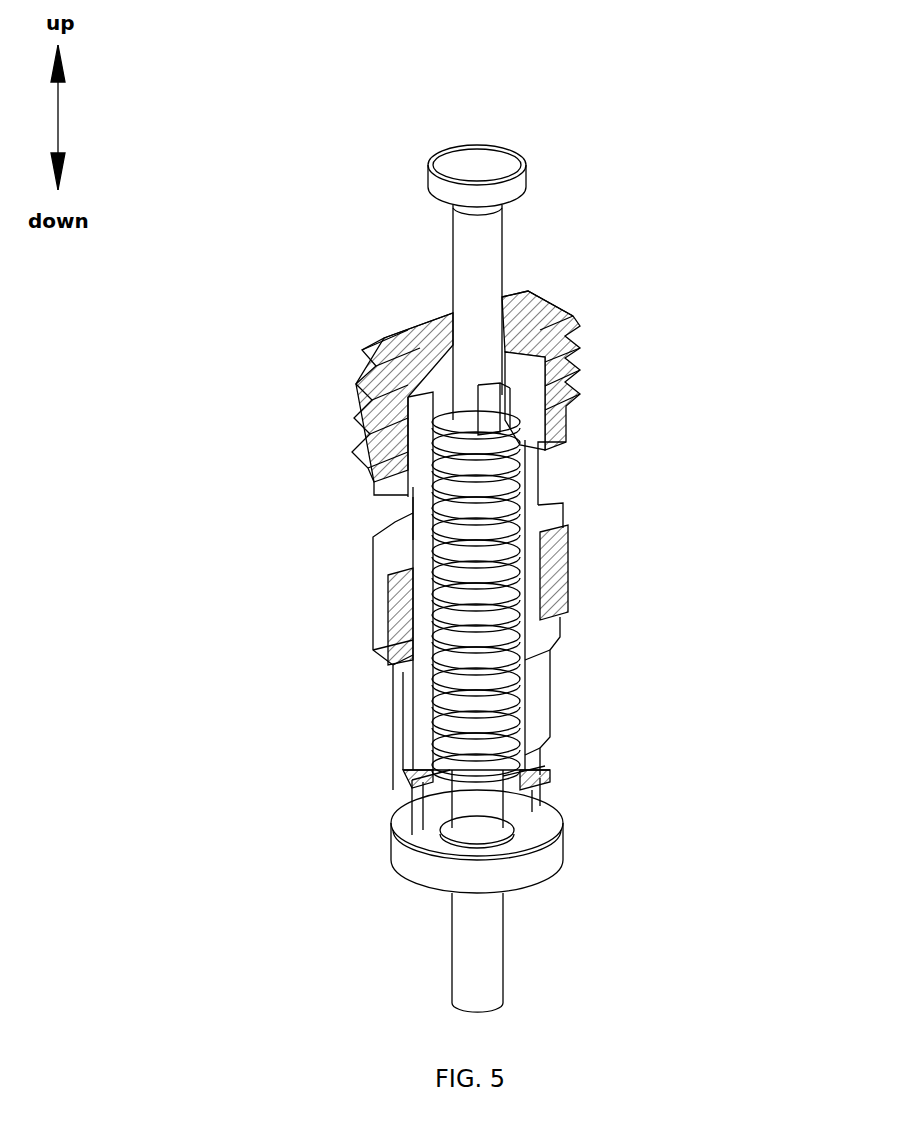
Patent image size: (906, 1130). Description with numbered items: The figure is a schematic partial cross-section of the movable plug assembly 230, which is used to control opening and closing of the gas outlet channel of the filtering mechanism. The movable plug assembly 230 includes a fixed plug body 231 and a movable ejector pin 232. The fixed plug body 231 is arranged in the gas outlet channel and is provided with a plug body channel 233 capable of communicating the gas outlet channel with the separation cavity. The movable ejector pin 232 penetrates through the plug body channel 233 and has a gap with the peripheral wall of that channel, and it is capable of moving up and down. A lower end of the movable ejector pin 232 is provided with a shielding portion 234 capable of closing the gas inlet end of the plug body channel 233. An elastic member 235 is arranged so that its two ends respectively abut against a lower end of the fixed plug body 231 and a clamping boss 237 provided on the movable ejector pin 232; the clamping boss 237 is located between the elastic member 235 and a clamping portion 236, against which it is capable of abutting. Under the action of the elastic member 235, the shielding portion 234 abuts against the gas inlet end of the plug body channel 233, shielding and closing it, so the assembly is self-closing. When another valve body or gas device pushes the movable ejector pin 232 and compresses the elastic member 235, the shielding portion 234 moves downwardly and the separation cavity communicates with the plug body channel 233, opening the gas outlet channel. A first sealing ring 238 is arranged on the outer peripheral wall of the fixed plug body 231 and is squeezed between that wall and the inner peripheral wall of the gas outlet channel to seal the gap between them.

The movable plug assembly 230 is at (631, 270).
The fixed plug body 231 is at (418, 722).
The movable ejector pin 232 is at (478, 275).
The plug body channel 233 is at (412, 782).
The shielding portion 234 is at (520, 878).
The elastic member 235 is at (522, 515).
The clamping portion 236 is at (440, 352).
The clamping boss 237 is at (505, 395).
The first sealing ring 238 is at (565, 590).